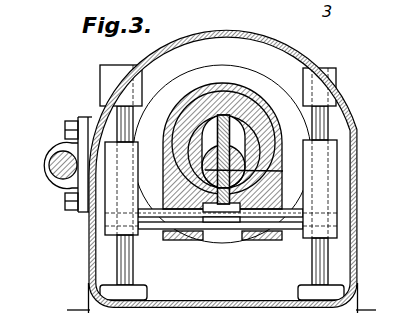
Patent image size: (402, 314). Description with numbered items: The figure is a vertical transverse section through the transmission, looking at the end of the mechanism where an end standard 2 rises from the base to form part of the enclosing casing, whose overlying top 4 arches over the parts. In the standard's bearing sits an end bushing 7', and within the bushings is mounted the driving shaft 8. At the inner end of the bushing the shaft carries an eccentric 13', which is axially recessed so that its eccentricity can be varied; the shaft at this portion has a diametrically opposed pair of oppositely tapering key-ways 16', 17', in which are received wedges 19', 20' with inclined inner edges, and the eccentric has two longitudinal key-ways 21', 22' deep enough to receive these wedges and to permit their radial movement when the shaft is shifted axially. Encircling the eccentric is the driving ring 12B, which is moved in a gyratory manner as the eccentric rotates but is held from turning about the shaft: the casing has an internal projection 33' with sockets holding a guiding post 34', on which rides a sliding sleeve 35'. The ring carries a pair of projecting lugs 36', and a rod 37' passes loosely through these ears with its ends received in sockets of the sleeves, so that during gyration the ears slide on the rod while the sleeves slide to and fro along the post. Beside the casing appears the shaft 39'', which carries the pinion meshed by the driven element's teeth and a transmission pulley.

The end standard 2 is at (352, 245).
The top of casing 4 is at (277, 44).
The end bushing 7' is at (222, 154).
The driving shaft 8 is at (205, 170).
The driving ring 12B is at (212, 91).
The eccentric 13' is at (240, 125).
The key-way 16' is at (249, 132).
The key-way 17' is at (257, 170).
The wedge 19' is at (240, 124).
The wedge 20' is at (220, 234).
The key-way of eccentric 21' is at (209, 121).
The key-way of eccentric 22' is at (215, 232).
The internal projection 33' is at (231, 172).
The guiding post 34' is at (231, 183).
The sliding sleeve 35' is at (221, 172).
The lug 36' is at (221, 253).
The rod 37' is at (228, 246).
The shaft 39'' is at (55, 164).